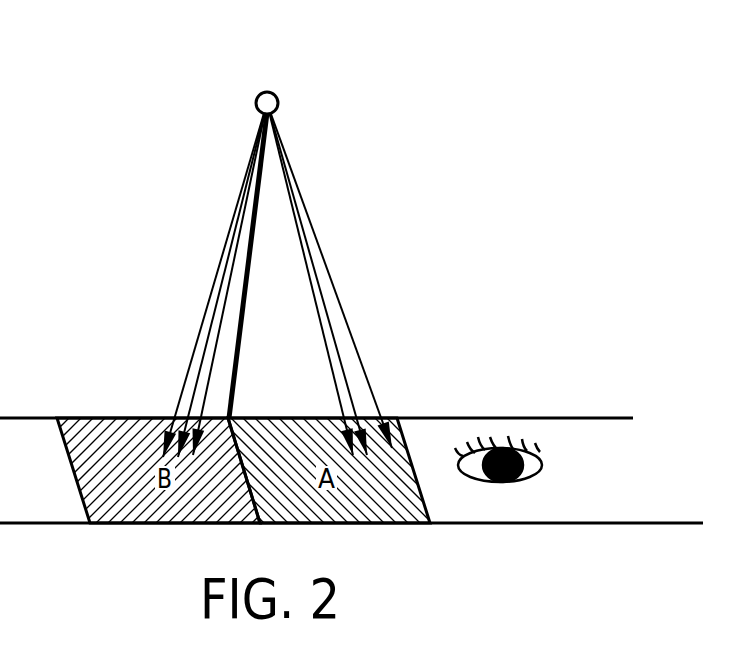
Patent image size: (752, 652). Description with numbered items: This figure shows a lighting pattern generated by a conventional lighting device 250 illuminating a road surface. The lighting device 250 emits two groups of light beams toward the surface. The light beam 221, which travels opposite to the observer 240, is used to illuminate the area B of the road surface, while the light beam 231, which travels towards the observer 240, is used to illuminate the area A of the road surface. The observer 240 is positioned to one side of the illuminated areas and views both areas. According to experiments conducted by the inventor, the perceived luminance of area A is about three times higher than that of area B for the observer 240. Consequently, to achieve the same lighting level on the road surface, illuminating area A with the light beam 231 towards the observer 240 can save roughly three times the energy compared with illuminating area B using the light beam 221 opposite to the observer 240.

The lighting device 250 is at (267, 91).
The light beam 221 is at (210, 290).
The light beam 231 is at (320, 290).
The observer 240 is at (543, 467).